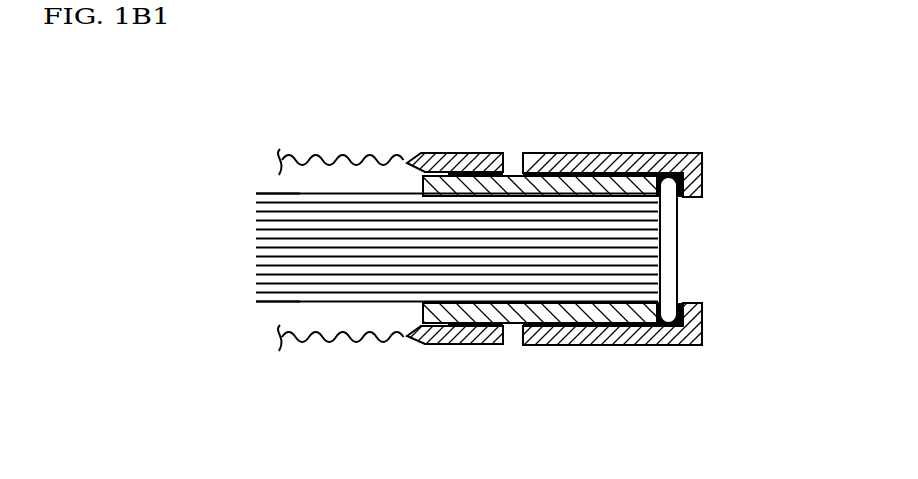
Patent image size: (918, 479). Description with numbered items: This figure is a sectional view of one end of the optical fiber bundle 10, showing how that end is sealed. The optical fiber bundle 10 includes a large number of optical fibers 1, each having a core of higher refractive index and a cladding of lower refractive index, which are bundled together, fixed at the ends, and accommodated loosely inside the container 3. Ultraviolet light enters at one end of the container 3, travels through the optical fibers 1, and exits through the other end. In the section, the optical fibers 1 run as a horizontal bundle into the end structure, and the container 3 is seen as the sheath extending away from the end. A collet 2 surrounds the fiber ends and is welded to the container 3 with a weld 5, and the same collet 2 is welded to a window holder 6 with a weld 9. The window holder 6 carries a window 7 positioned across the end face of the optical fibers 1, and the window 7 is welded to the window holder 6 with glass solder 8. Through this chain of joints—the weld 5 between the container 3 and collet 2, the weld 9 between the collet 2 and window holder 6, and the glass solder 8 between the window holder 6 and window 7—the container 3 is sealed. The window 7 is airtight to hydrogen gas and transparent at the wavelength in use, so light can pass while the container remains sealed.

The optical fibers 1 is at (298, 302).
The collet 2 is at (512, 322).
The container 3 is at (326, 152).
The weld 5 is at (480, 153).
The window holder 6 is at (630, 153).
The window 7 is at (669, 256).
The glass solder 8 is at (667, 345).
The weld 9 is at (575, 345).
The optical fiber bundle 10 is at (202, 229).